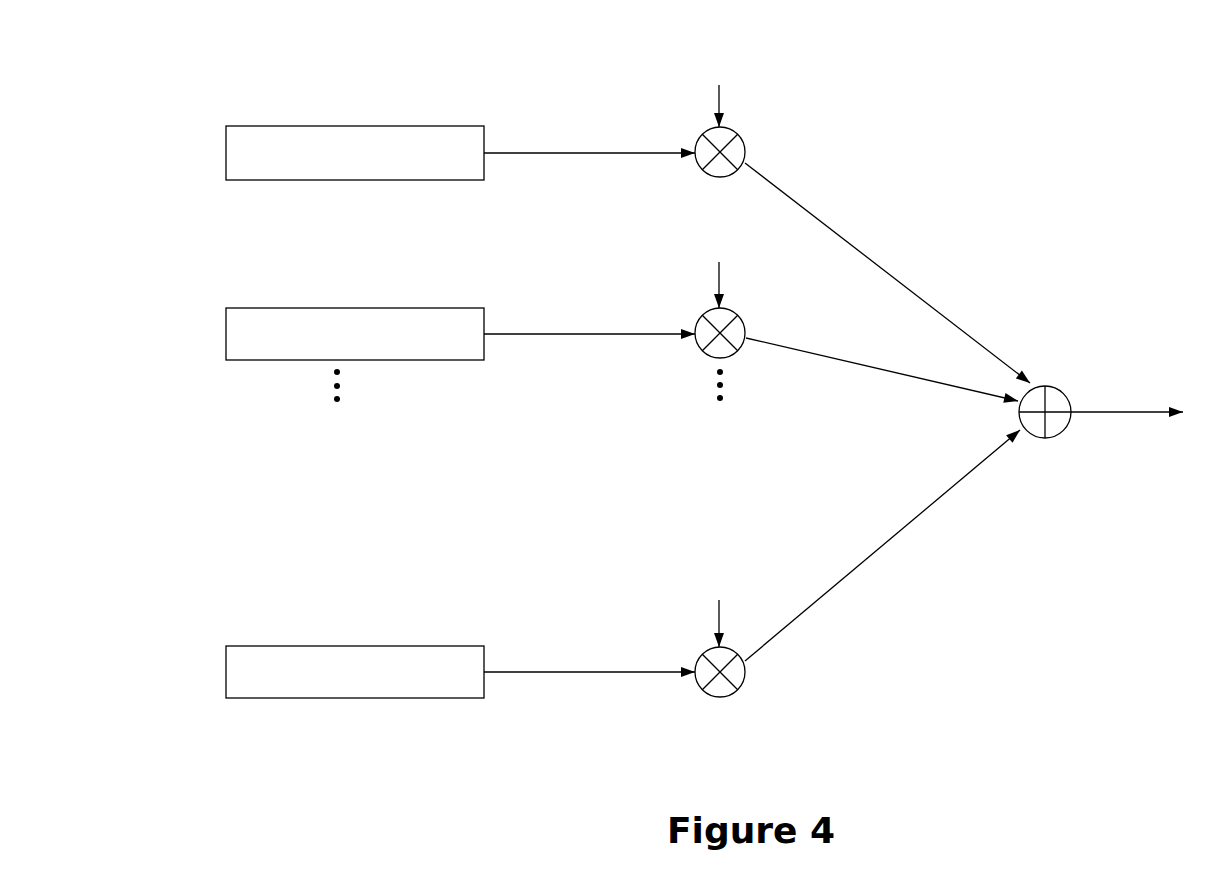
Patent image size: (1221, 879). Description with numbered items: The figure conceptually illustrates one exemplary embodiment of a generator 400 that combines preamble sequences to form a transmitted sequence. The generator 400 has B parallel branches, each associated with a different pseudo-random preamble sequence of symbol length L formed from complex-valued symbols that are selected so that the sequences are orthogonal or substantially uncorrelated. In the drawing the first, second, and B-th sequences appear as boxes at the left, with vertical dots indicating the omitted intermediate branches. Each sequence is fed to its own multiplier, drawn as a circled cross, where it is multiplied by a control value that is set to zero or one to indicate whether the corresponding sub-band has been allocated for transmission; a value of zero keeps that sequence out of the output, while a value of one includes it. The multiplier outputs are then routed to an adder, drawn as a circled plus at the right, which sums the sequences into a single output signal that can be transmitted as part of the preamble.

The generator 400 is at (1107, 110).